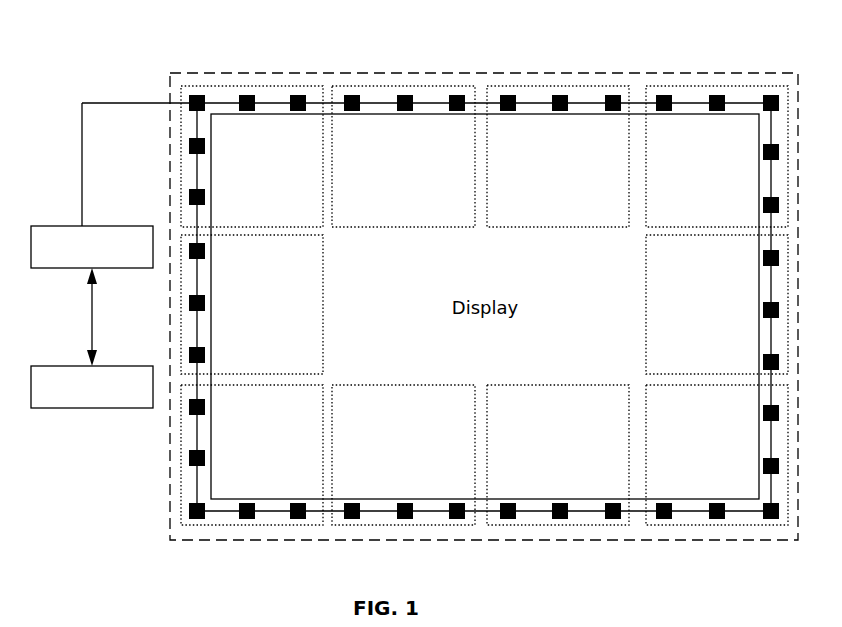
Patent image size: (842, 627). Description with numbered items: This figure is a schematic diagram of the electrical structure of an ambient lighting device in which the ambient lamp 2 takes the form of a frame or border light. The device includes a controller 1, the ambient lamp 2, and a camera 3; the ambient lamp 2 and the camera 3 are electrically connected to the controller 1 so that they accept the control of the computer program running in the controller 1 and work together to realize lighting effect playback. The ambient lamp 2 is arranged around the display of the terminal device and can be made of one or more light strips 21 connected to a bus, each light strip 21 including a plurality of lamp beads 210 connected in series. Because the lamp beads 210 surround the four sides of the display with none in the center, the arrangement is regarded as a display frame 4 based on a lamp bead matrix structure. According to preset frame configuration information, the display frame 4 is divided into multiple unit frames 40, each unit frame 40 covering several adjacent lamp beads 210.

The controller 1 is at (51, 226).
The ambient lamp 2 is at (311, 68).
The camera 3 is at (72, 366).
The display frame 4 is at (420, 73).
The unit frame 40 is at (540, 87).
The light strip 21 is at (197, 478).
The lamp bead 210 is at (189, 460).